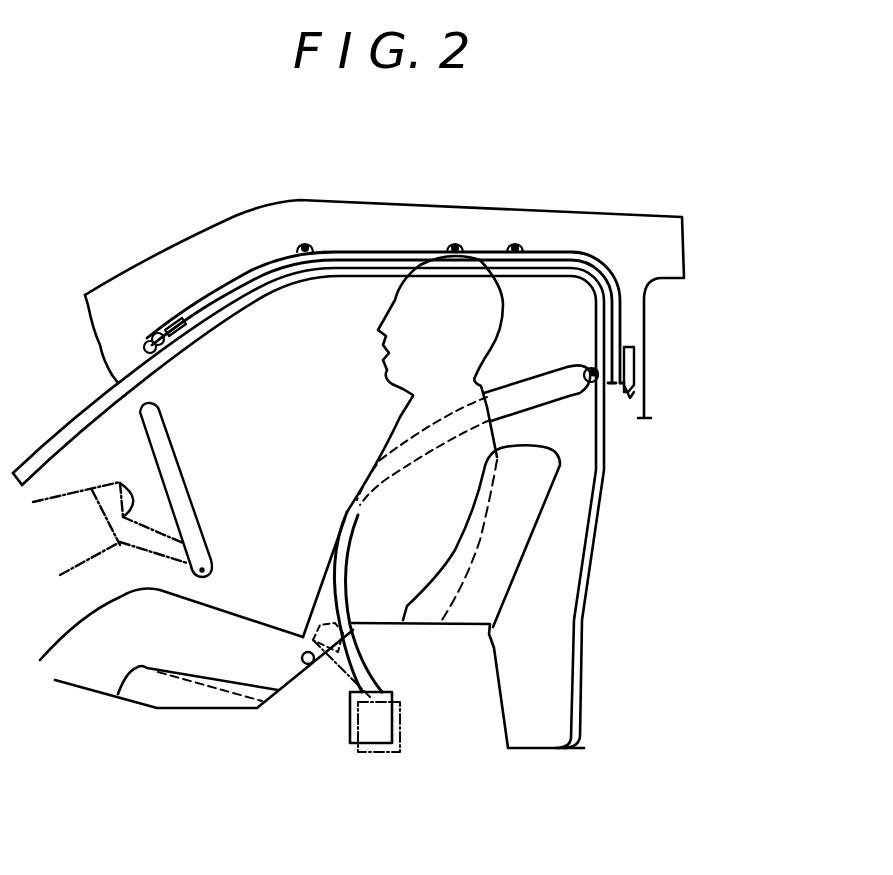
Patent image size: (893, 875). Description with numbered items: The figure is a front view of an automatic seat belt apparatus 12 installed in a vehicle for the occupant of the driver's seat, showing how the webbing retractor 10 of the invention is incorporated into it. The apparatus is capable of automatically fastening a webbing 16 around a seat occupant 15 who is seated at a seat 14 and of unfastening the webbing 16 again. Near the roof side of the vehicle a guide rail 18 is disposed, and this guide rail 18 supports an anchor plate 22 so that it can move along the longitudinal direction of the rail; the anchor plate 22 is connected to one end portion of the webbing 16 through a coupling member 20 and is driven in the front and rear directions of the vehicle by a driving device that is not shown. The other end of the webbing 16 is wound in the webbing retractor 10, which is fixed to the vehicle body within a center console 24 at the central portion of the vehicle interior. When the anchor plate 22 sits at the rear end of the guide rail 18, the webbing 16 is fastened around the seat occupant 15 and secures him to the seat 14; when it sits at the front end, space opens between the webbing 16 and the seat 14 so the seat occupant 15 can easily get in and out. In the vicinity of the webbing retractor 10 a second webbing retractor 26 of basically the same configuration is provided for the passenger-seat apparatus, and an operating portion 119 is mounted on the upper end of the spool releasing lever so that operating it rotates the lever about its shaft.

The webbing retractor 10 is at (393, 692).
The automatic seat belt apparatus 12 is at (497, 240).
The seat 14 is at (528, 547).
The seat occupant 15 is at (407, 402).
The webbing 16 is at (545, 393).
The guide rail 18 is at (362, 250).
The coupling member 20 is at (580, 366).
The anchor plate 22 is at (590, 363).
The center console 24 is at (500, 680).
The webbing retractor 26 is at (400, 738).
The operating portion 119 is at (300, 657).